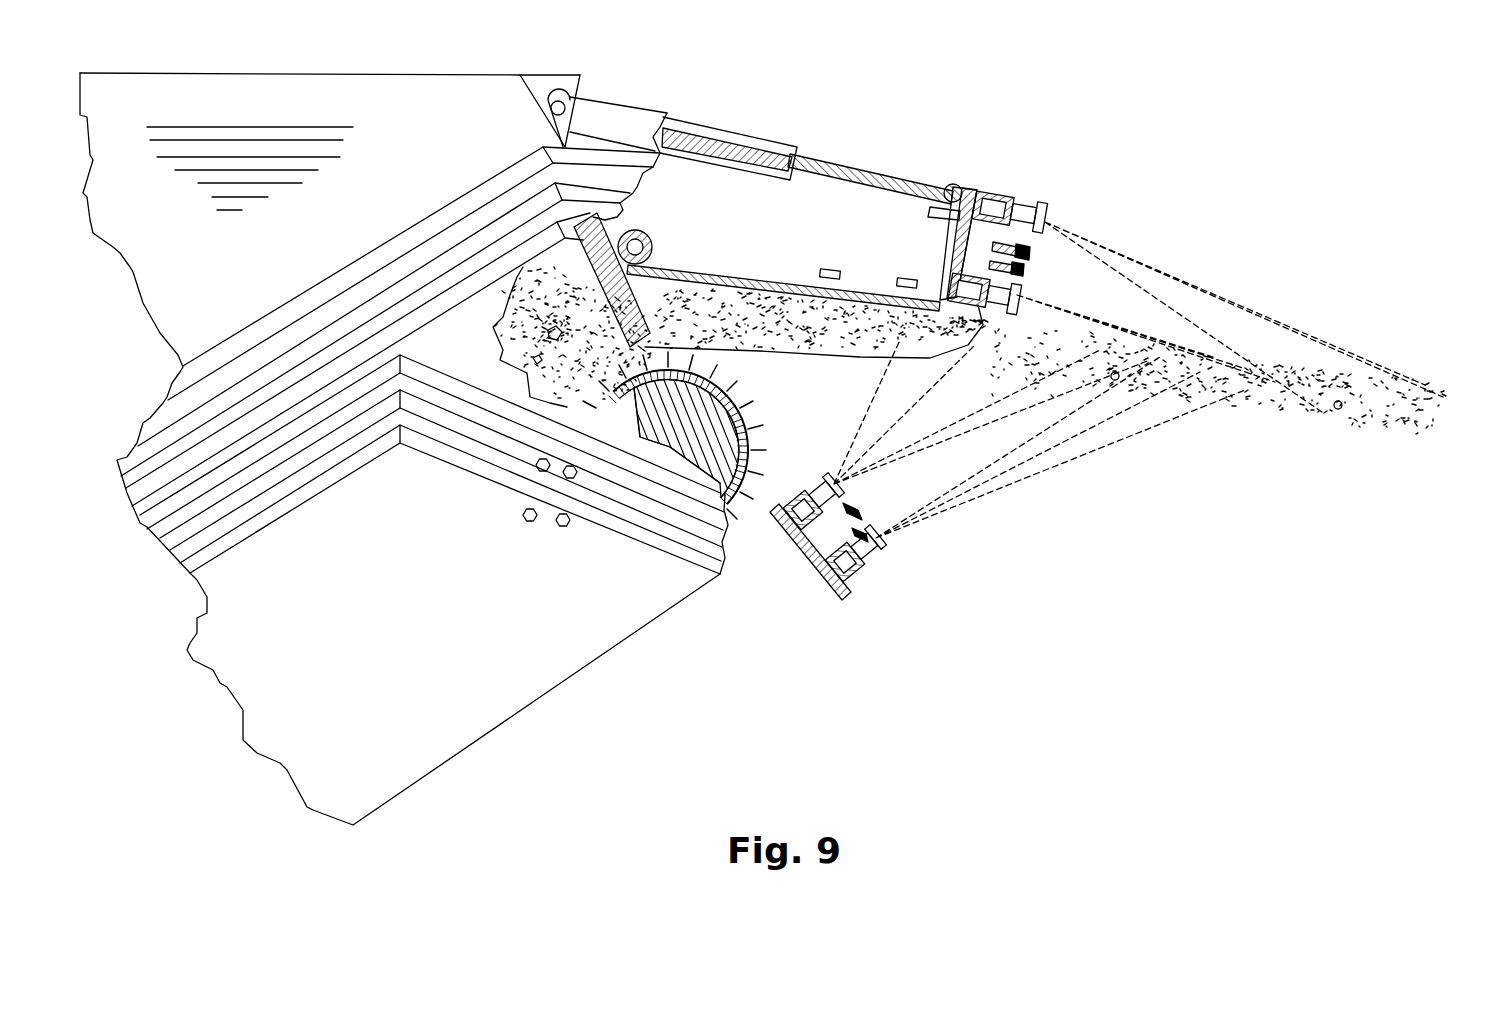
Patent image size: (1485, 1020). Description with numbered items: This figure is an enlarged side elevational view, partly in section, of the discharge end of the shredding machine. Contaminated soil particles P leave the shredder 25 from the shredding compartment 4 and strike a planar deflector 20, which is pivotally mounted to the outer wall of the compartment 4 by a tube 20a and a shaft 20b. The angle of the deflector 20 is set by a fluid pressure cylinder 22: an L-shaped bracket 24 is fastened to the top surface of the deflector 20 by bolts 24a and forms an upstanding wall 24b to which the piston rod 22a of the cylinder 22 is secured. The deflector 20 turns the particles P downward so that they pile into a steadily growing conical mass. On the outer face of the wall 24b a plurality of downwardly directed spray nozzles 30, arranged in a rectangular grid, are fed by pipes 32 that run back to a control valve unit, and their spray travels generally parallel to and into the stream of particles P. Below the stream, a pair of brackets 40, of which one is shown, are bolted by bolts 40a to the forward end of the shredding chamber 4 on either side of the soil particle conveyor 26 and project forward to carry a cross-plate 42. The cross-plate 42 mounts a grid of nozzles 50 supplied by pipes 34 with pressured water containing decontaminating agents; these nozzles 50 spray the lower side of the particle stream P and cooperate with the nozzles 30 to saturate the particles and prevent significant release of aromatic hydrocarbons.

The shredding compartment 4 is at (425, 140).
The planar deflector 20 is at (713, 273).
The tube 20a is at (630, 220).
The shaft 20b is at (652, 236).
The fluid pressure cylinder 22 is at (693, 117).
The piston rod 22a is at (827, 157).
The L-shaped bracket 24 is at (910, 207).
The bolts 24a is at (822, 272).
The upstanding wall 24b is at (940, 207).
The shredder 25 is at (647, 350).
The soil particle conveyor 26 is at (735, 393).
The spray nozzles 30 is at (1020, 290).
The pipes 32 is at (1000, 187).
The pipes 34 is at (480, 430).
The brackets 40 is at (743, 580).
The bolts 40a is at (537, 450).
The cross-plate 42 is at (807, 557).
The nozzles 50 is at (878, 540).
The soft particles P is at (1317, 413).